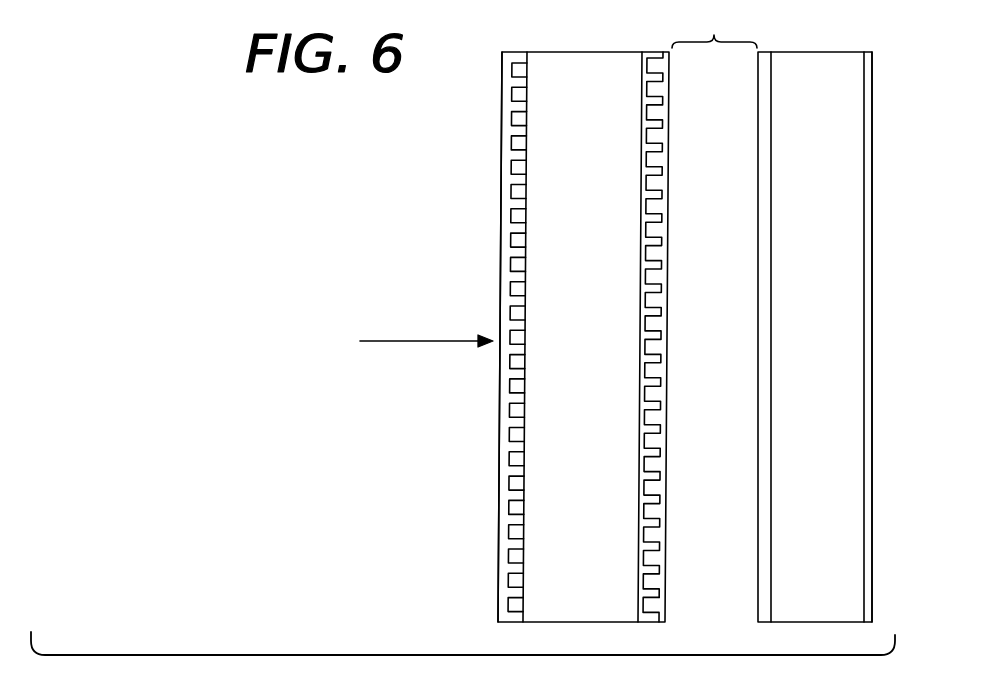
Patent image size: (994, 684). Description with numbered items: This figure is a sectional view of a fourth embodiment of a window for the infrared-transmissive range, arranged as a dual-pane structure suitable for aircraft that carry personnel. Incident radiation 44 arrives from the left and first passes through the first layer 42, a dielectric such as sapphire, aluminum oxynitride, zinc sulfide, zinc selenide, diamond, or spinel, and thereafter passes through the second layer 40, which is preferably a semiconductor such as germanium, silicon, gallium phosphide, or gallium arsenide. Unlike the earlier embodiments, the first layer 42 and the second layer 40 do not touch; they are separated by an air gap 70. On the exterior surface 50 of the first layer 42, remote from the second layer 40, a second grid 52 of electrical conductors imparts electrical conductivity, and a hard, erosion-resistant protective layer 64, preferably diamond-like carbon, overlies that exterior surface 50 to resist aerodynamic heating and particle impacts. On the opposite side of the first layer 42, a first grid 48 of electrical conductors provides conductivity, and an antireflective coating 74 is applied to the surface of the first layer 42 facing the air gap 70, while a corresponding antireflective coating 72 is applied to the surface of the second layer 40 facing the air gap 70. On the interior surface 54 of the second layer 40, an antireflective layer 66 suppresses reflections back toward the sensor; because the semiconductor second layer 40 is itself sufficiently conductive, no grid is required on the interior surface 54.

The second layer 40 is at (814, 319).
The first layer 42 is at (572, 336).
The incident radiation 44 is at (407, 340).
The first grid 48 is at (646, 615).
The exterior surface 50 is at (521, 496).
The second grid 52 is at (514, 604).
The interior surface 54 is at (858, 452).
The protective layer 64 is at (502, 428).
The antireflective layer 66 is at (862, 408).
The air gap 70 is at (714, 27).
The antireflective coating 72 is at (761, 147).
The antireflective coating 74 is at (664, 213).